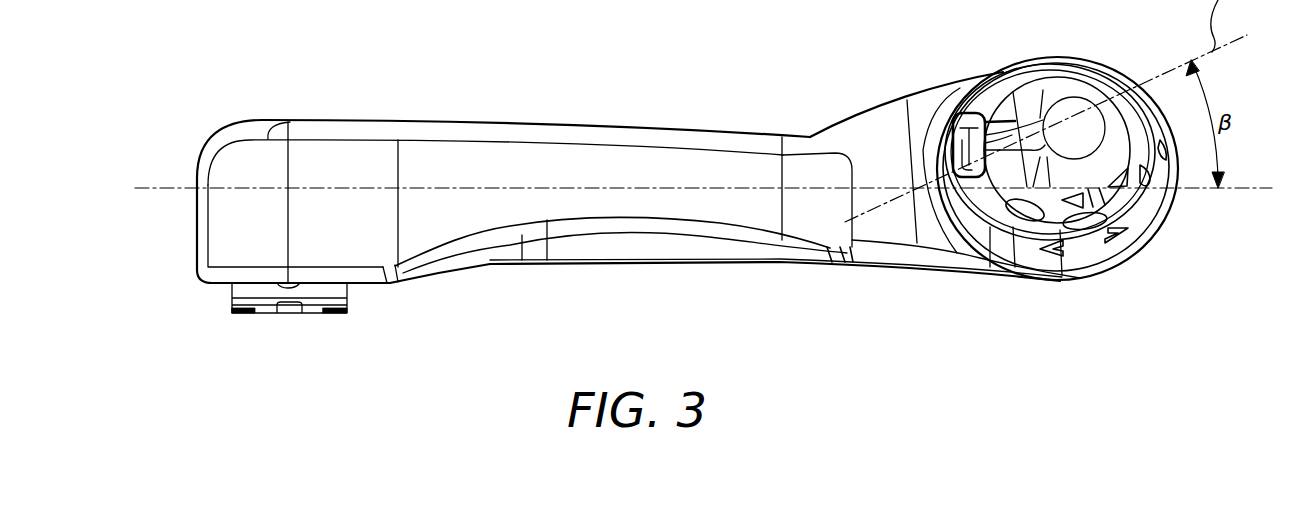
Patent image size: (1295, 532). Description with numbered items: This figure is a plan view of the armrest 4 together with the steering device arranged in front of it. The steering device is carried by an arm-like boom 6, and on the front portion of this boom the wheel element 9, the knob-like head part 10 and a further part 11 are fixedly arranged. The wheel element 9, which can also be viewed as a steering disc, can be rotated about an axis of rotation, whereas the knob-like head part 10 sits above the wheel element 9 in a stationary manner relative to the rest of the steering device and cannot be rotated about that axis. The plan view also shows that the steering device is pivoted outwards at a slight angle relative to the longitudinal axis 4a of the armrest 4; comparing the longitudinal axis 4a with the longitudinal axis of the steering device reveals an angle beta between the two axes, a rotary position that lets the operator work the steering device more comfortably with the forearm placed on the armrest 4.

The armrest 4 is at (590, 162).
The longitudinal axis of the armrest 4a is at (633, 190).
The arm-like boom 6 is at (868, 123).
The wheel element 9 is at (1055, 203).
The knob-like head part 10 is at (1067, 83).
The part fixedly arranged on the boom 11 is at (1142, 213).